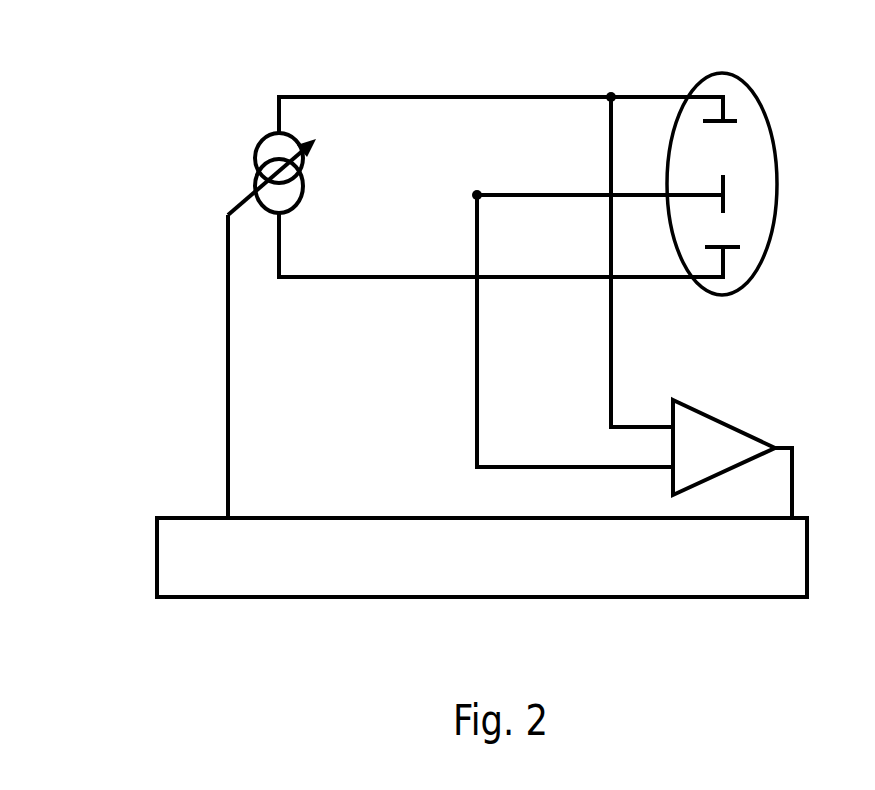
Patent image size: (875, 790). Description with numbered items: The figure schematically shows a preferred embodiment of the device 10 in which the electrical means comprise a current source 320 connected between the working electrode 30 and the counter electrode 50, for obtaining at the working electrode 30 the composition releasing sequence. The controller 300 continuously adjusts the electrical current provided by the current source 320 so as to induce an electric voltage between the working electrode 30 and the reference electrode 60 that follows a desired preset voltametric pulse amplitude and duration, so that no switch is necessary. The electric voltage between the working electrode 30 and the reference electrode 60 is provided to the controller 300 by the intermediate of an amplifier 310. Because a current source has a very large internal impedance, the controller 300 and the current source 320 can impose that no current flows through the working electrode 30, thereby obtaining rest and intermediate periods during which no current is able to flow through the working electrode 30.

The device 10 is at (143, 87).
The current source 320 is at (252, 174).
The working electrode 30 is at (755, 106).
The reference electrode 60 is at (749, 191).
The counter electrode 50 is at (762, 266).
The amplifier 310 is at (724, 447).
The controller 300 is at (482, 557).